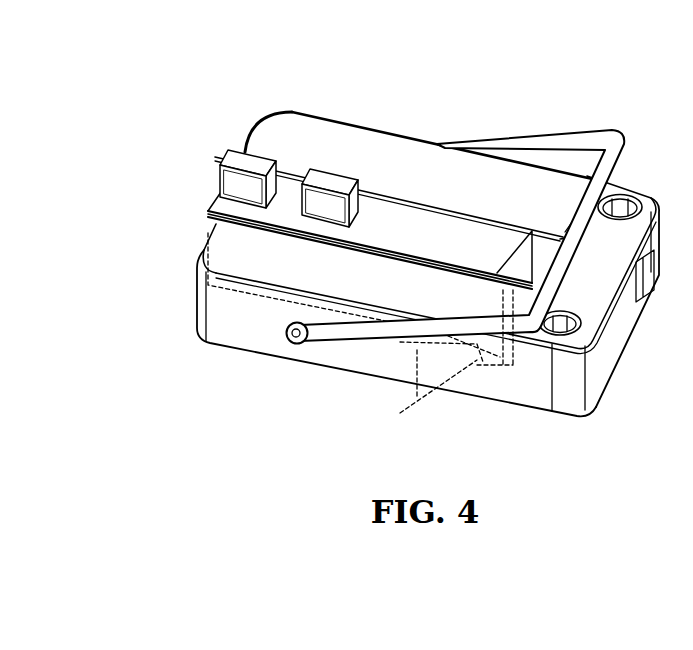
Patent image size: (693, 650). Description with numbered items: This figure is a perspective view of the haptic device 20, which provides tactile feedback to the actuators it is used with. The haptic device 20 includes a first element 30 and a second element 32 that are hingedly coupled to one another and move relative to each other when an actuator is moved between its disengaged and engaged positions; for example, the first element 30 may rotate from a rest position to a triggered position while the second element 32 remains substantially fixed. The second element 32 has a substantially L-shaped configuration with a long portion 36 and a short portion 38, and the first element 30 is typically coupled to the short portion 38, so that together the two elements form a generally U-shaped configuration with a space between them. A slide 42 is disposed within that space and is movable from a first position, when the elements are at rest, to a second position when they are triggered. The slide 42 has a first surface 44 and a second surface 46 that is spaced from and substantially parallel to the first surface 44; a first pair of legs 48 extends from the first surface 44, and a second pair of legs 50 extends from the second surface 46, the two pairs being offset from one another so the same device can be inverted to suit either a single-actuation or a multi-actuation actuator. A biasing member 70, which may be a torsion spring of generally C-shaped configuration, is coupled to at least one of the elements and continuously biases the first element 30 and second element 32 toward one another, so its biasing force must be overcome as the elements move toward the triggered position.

The haptic device 20 is at (436, 249).
The first element 30 is at (394, 182).
The second element 32 is at (440, 312).
The long portion 36 is at (267, 342).
The short portion 38 is at (597, 281).
The slide 42 is at (238, 210).
The first surface 44 is at (415, 241).
The second surface 46 is at (238, 298).
The first pair of legs 48 is at (328, 178).
The second pair of legs 50 is at (417, 400).
The biasing member 70 is at (615, 133).